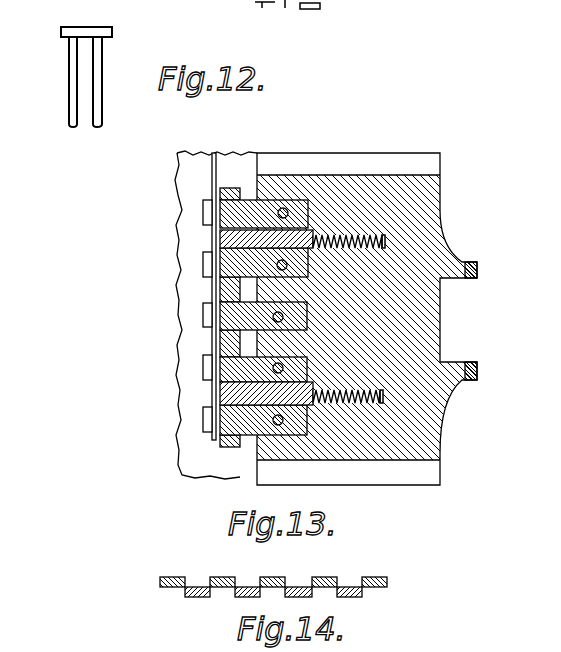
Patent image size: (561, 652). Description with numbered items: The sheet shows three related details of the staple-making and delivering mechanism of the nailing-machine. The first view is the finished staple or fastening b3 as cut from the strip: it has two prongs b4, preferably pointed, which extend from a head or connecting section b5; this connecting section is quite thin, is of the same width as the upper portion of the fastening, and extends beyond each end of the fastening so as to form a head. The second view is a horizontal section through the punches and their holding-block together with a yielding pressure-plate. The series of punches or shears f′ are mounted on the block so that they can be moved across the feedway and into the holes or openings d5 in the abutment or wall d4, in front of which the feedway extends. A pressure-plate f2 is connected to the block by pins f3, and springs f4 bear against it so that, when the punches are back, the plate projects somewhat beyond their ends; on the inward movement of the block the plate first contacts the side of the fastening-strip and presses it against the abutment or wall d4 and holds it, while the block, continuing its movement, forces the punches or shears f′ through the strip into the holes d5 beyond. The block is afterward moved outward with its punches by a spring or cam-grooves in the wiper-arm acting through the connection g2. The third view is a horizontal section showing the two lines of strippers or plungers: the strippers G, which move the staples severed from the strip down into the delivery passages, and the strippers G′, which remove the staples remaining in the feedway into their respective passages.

In FIG. 12, the head or connecting section b5 is at (78, 18).
In FIG. 12, the staple or fastening b3 is at (93, 32).
In FIG. 12, the prongs b4 is at (56, 112).
In FIG. 13, the punches or shears f′ is at (245, 195).
In FIG. 13, the pressure-plate f2 is at (245, 240).
In FIG. 13, the pins f3 is at (312, 238).
In FIG. 13, the springs f4 is at (385, 240).
In FIG. 13, the connection g2 is at (478, 268).
In FIG. 13, the abutment or wall d4 is at (203, 340).
In FIG. 13, the holes or openings d5 is at (203, 215).
In FIG. 14, the strippers or plungers G is at (172, 577).
In FIG. 14, the strippers G′ is at (192, 597).